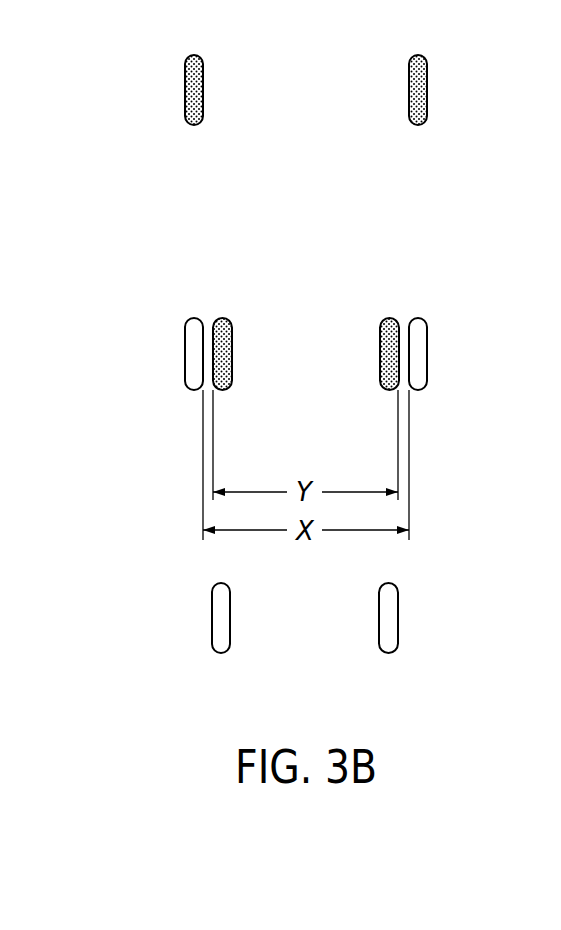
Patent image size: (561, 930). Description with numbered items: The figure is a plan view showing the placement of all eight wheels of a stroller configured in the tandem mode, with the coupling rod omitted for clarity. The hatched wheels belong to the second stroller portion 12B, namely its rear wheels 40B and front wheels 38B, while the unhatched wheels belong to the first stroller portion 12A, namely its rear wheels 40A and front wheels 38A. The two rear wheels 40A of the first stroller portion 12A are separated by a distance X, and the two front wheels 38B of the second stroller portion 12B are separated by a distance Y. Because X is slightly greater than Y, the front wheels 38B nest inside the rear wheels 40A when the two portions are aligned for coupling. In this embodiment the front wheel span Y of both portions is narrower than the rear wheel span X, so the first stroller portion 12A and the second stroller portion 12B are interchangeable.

The first stroller portion 12A is at (148, 478).
The second stroller portion 12B is at (148, 192).
The front wheels of the first stroller portion 38A is at (218, 617).
The front wheels of the second stroller portion 38B is at (223, 344).
The rear wheels of the first stroller portion 40A is at (190, 355).
The rear wheels of the second stroller portion 40B is at (190, 91).